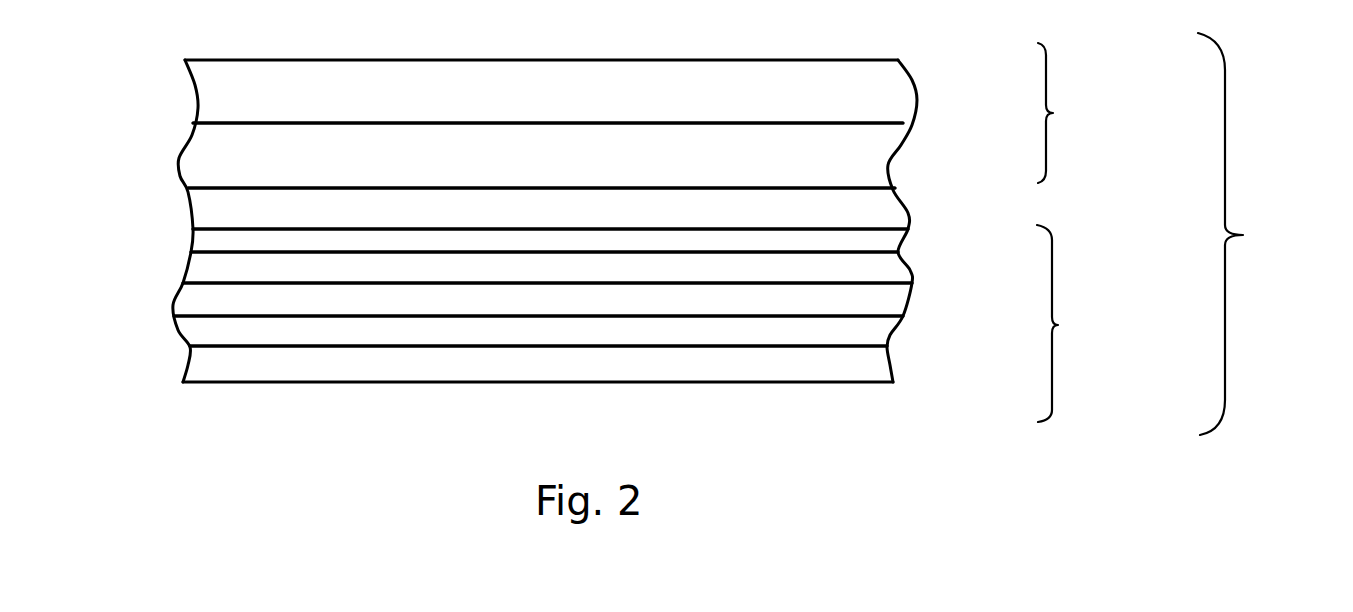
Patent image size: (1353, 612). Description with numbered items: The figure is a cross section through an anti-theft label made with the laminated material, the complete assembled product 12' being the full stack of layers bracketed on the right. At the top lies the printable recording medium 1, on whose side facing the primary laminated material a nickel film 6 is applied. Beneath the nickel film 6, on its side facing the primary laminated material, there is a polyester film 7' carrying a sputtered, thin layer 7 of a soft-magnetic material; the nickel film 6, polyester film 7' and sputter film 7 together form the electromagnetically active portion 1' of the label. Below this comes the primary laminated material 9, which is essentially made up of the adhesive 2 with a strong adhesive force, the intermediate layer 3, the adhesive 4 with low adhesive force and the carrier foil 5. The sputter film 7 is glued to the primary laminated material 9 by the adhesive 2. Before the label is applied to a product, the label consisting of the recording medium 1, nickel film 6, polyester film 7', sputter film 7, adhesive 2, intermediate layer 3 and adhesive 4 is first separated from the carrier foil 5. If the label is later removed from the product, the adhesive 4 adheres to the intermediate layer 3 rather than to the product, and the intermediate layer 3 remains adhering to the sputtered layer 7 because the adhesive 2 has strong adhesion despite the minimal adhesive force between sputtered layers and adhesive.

The printable recording medium 1 is at (586, 89).
The nickel film 6 is at (873, 155).
The polyester film 7' is at (494, 193).
The sputtered layer of soft-magnetic material 7 is at (494, 249).
The adhesive with strong adhesive force 2 is at (892, 272).
The intermediate layer 3 is at (188, 295).
The adhesive with low adhesive force 4 is at (875, 330).
The carrier foil 5 is at (865, 368).
The electromagnetically active portion 1' is at (1082, 113).
The primary laminated material 9 is at (1076, 323).
The anti-theft label product 12' is at (1269, 234).